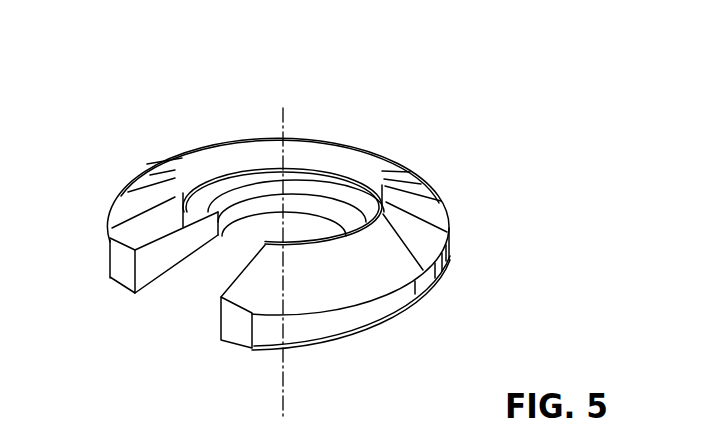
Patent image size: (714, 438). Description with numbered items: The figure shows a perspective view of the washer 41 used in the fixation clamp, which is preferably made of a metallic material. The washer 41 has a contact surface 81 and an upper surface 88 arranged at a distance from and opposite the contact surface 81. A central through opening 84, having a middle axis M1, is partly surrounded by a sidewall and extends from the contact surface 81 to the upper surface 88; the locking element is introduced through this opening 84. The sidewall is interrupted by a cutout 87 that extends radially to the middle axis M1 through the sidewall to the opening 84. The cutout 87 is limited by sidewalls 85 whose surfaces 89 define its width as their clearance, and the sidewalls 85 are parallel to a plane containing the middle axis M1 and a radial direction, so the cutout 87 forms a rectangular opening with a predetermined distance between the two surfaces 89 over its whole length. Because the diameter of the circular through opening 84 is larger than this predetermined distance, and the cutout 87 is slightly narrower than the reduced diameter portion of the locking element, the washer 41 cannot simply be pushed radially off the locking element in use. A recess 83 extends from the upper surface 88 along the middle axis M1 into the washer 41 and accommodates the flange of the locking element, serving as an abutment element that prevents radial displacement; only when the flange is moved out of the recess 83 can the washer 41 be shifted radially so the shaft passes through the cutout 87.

The washer 41 is at (414, 192).
The contact surface 81 is at (162, 289).
The recess 83 is at (245, 158).
The central through opening 84 is at (318, 208).
The sidewalls 85 is at (152, 245).
The cutout 87 is at (213, 291).
The upper surface 88 is at (188, 155).
The surfaces of the sidewalls 89 is at (153, 263).
The middle axis M1 is at (284, 387).